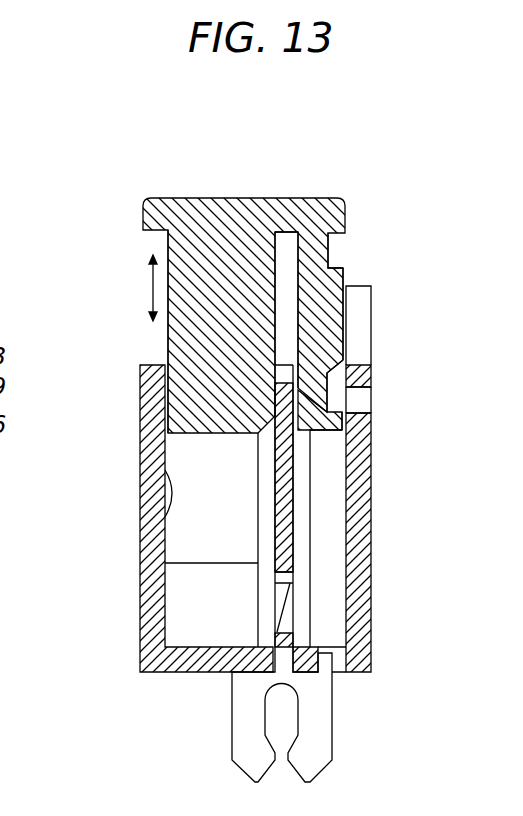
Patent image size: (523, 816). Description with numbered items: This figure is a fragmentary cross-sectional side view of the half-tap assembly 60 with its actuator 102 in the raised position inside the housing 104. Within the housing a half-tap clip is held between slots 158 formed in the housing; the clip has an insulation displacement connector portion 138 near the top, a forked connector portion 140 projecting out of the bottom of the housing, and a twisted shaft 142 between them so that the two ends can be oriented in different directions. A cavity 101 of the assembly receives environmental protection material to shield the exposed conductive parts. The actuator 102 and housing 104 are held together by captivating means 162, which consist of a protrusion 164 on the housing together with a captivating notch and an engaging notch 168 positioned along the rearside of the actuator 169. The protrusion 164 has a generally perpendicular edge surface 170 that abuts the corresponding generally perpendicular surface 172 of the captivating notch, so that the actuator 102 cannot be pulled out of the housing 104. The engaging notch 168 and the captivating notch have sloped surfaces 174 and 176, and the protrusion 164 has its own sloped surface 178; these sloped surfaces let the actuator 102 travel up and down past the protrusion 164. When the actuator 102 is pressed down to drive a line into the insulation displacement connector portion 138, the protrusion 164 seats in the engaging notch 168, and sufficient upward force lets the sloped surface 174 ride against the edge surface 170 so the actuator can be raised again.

The half-tap assembly 60 is at (115, 290).
The cavity 101 is at (163, 482).
The actuator 102 is at (250, 278).
The housing 104 is at (231, 518).
The insulation displacement connector portion 138 is at (363, 439).
The forked connector portion 140 is at (238, 750).
The shaft 142 is at (285, 628).
The slots 158 is at (303, 394).
The captivating means 162 is at (383, 318).
The protrusion 164 is at (344, 409).
The engaging notch 168 is at (334, 243).
The rearside of the actuator 169 is at (338, 322).
The generally perpendicular edge surface 170 is at (344, 430).
The generally perpendicular surface 172 is at (270, 380).
The sloped surface 174 is at (340, 289).
The sloped surface 176 is at (344, 364).
The sloped surface 178 is at (342, 393).